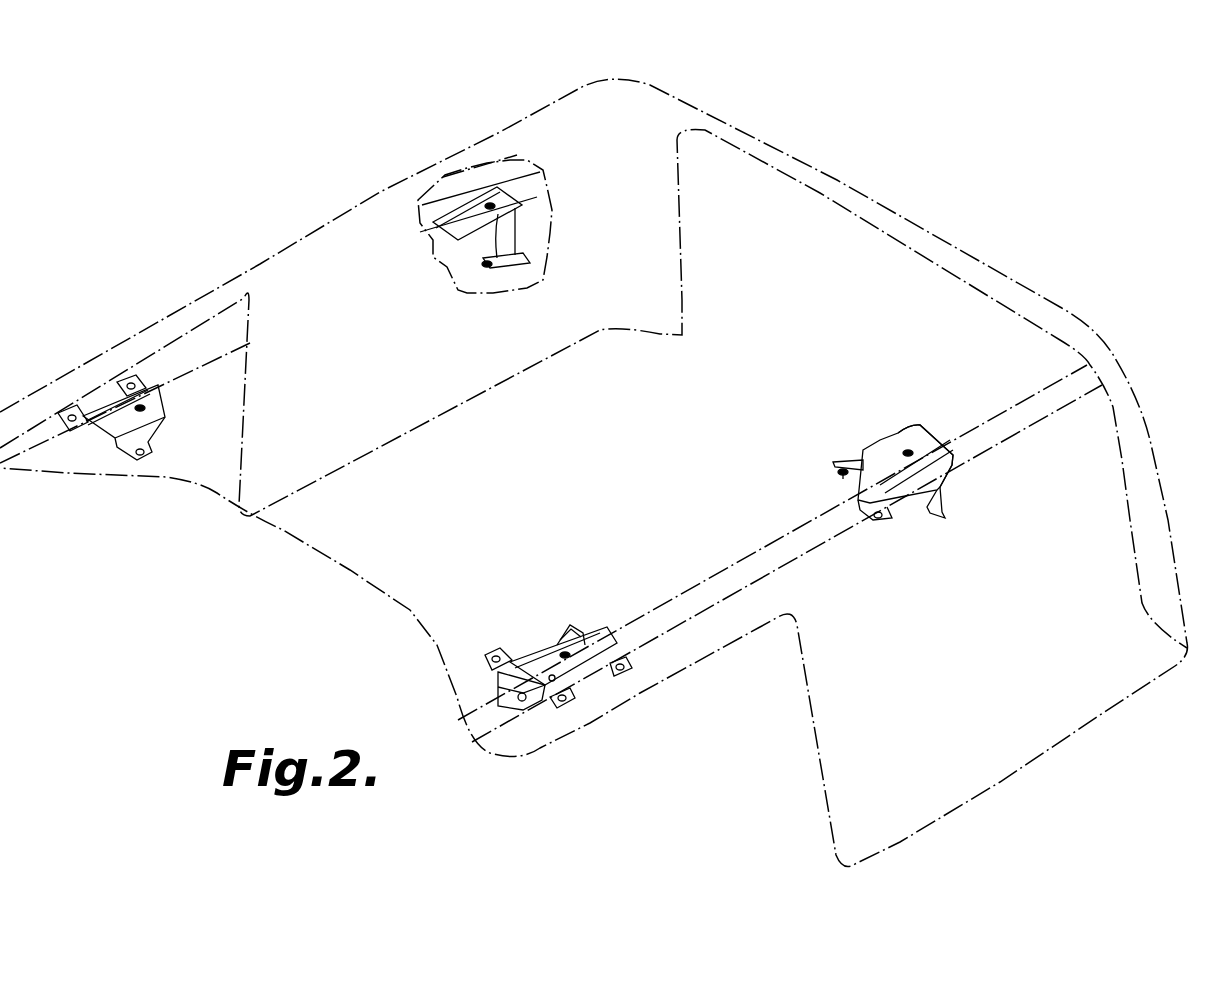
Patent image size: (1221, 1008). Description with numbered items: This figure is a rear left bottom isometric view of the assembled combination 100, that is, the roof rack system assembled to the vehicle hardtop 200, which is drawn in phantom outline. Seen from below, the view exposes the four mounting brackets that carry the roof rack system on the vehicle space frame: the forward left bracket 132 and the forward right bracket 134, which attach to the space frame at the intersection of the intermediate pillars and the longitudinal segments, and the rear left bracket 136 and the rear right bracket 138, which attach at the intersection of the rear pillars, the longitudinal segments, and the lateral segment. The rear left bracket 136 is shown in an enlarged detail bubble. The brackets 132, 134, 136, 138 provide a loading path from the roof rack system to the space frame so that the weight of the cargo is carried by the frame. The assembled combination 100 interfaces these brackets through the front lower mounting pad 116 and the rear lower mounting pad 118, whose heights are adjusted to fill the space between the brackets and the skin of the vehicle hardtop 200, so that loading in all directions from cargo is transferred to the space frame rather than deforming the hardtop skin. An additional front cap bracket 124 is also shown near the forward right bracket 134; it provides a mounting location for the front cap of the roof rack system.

The assembled combination 100 is at (1000, 167).
The vehicle hardtop 200 is at (1104, 345).
The front lower mounting pad 116 is at (105, 401).
The rear lower mounting pad 118 is at (503, 182).
The front cap bracket 124 is at (512, 702).
The forward left bracket 132 is at (145, 393).
The forward right bracket 134 is at (590, 662).
The rear left bracket 136 is at (463, 213).
The rear right bracket 138 is at (938, 487).